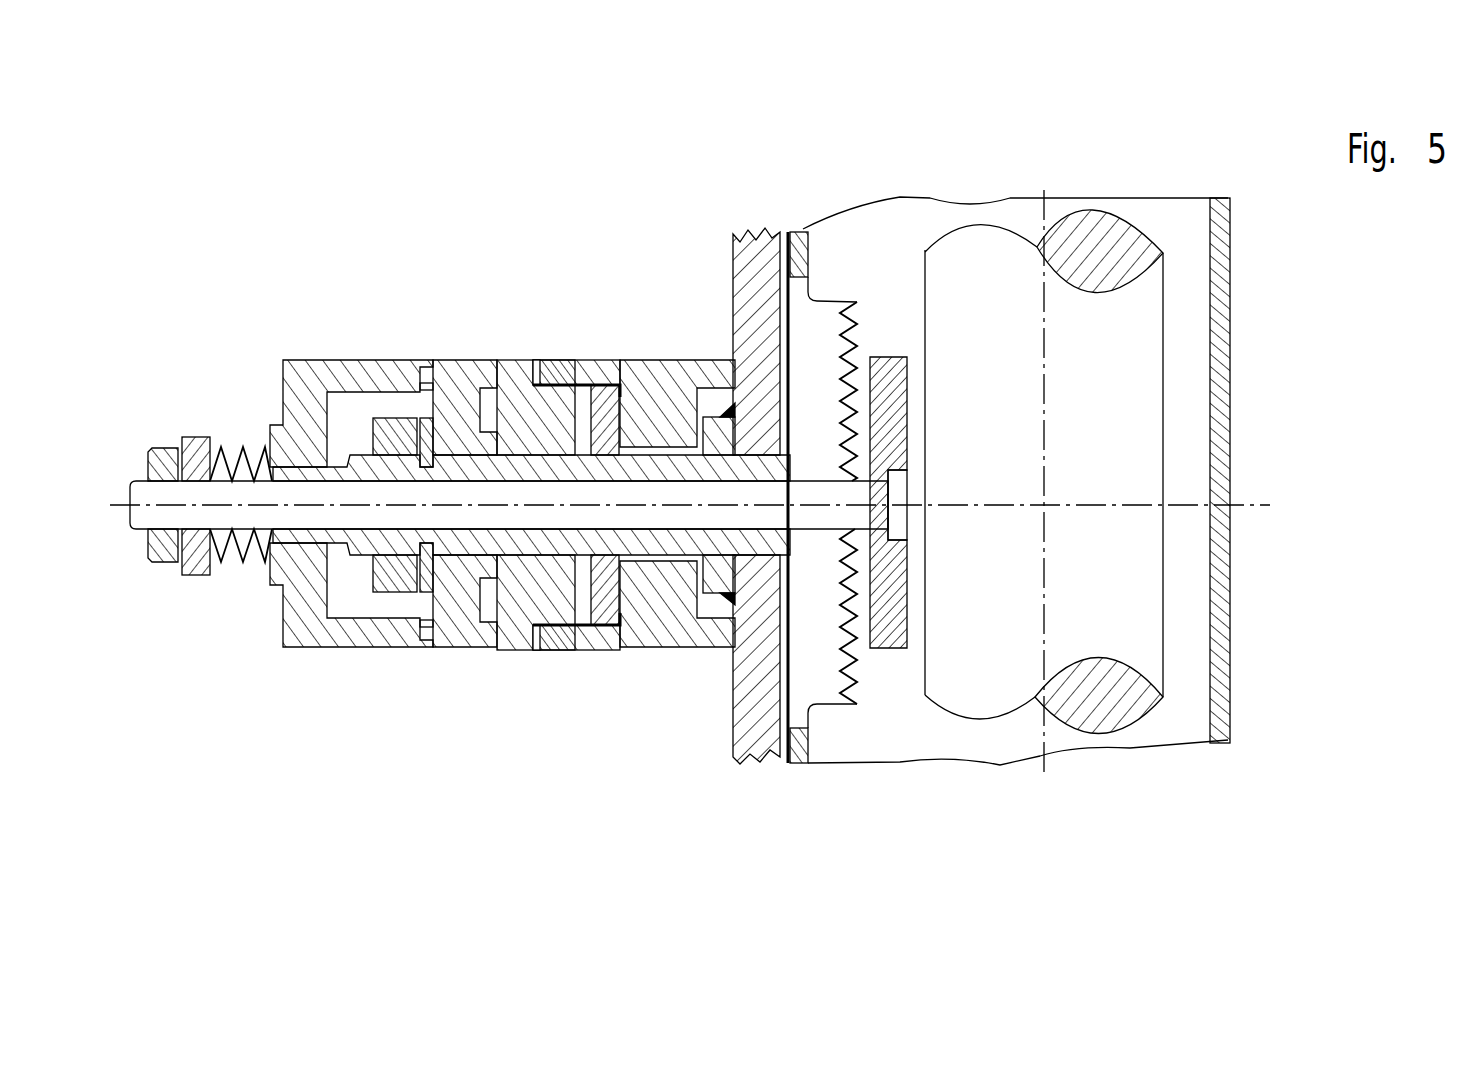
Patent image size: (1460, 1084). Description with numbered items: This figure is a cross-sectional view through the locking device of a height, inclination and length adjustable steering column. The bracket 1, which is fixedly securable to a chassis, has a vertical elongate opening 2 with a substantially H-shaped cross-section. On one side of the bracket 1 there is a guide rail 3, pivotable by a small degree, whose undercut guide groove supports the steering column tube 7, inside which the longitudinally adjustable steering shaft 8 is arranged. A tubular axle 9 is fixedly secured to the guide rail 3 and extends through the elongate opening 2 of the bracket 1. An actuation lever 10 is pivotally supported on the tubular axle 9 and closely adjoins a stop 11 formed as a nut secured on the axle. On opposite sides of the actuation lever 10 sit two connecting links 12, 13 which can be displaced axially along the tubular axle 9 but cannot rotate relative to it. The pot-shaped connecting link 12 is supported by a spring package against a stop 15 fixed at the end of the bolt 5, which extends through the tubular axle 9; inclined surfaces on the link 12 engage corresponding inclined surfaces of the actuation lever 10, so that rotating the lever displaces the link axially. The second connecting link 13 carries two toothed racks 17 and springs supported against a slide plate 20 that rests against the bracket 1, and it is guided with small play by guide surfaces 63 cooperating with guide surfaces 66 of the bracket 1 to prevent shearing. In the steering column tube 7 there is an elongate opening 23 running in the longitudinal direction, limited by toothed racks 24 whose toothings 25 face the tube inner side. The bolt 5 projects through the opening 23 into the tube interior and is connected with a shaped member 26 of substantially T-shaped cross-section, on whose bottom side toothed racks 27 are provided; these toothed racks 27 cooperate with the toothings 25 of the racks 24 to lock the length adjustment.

The bracket 1 is at (646, 373).
The vertical elongate opening 2 is at (660, 560).
The guide rail 3 is at (743, 250).
The bolt 5 is at (257, 518).
The steering column tube 7 is at (1183, 367).
The steering shaft 8 is at (1125, 428).
The tubular axle 9 is at (451, 467).
The actuation lever 10 is at (458, 633).
The stop 11 is at (397, 576).
The connecting link 12 is at (300, 367).
The second connecting link 13 is at (510, 373).
The stop 15 is at (160, 547).
The toothed rack 17 is at (538, 375).
The slide plate 20 is at (608, 405).
The elongate opening 23 is at (797, 313).
The toothed rack 24 is at (945, 510).
The toothing 25 is at (862, 672).
The shaped member 26 is at (898, 650).
The toothed rack 27 is at (867, 627).
The guide surface 63 is at (551, 633).
The guide surface 66 is at (584, 382).